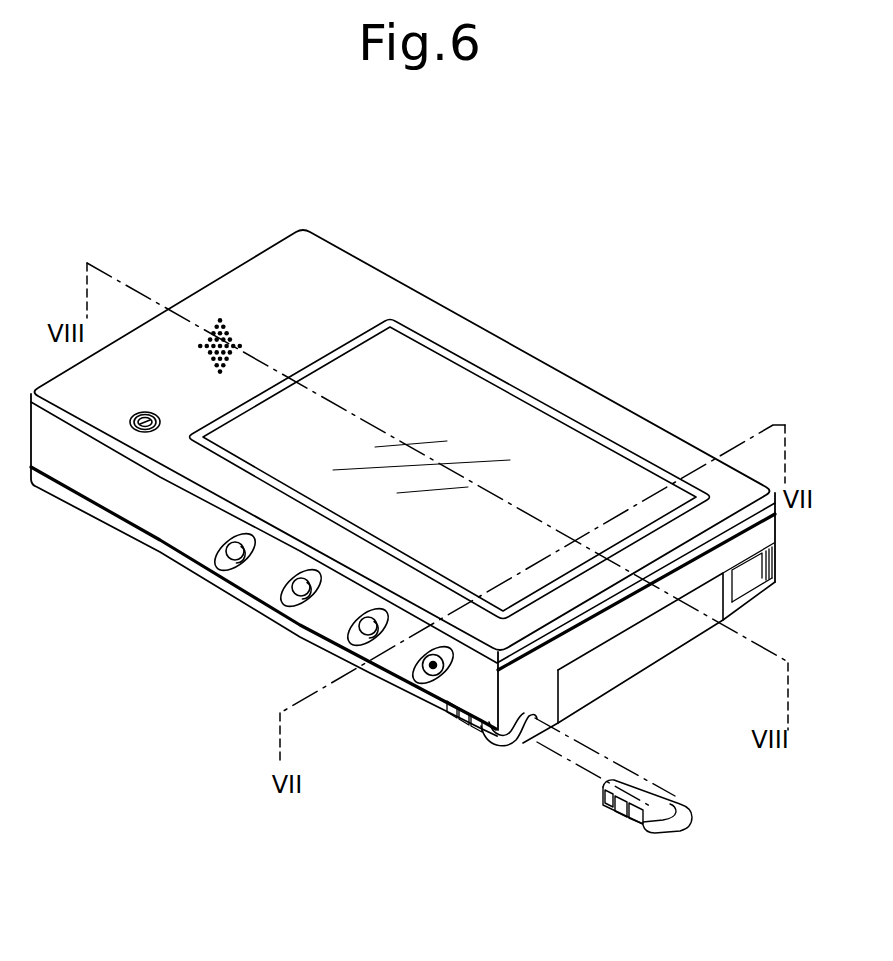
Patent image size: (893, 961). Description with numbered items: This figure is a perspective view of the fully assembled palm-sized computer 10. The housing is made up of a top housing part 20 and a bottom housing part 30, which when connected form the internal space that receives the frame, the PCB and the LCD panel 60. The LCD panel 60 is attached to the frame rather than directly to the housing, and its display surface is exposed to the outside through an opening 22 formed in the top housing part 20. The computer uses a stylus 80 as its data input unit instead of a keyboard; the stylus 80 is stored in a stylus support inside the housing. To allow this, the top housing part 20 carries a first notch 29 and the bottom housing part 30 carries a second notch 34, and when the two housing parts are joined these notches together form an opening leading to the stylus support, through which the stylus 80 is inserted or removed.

The palm-sized computer 10 is at (205, 133).
The top housing part 20 is at (640, 427).
The opening 22 is at (477, 363).
The LCD panel 60 is at (548, 433).
The bottom housing part 30 is at (245, 598).
The stylus 80 is at (482, 738).
The first notch 29 is at (532, 723).
The second notch 34 is at (523, 738).